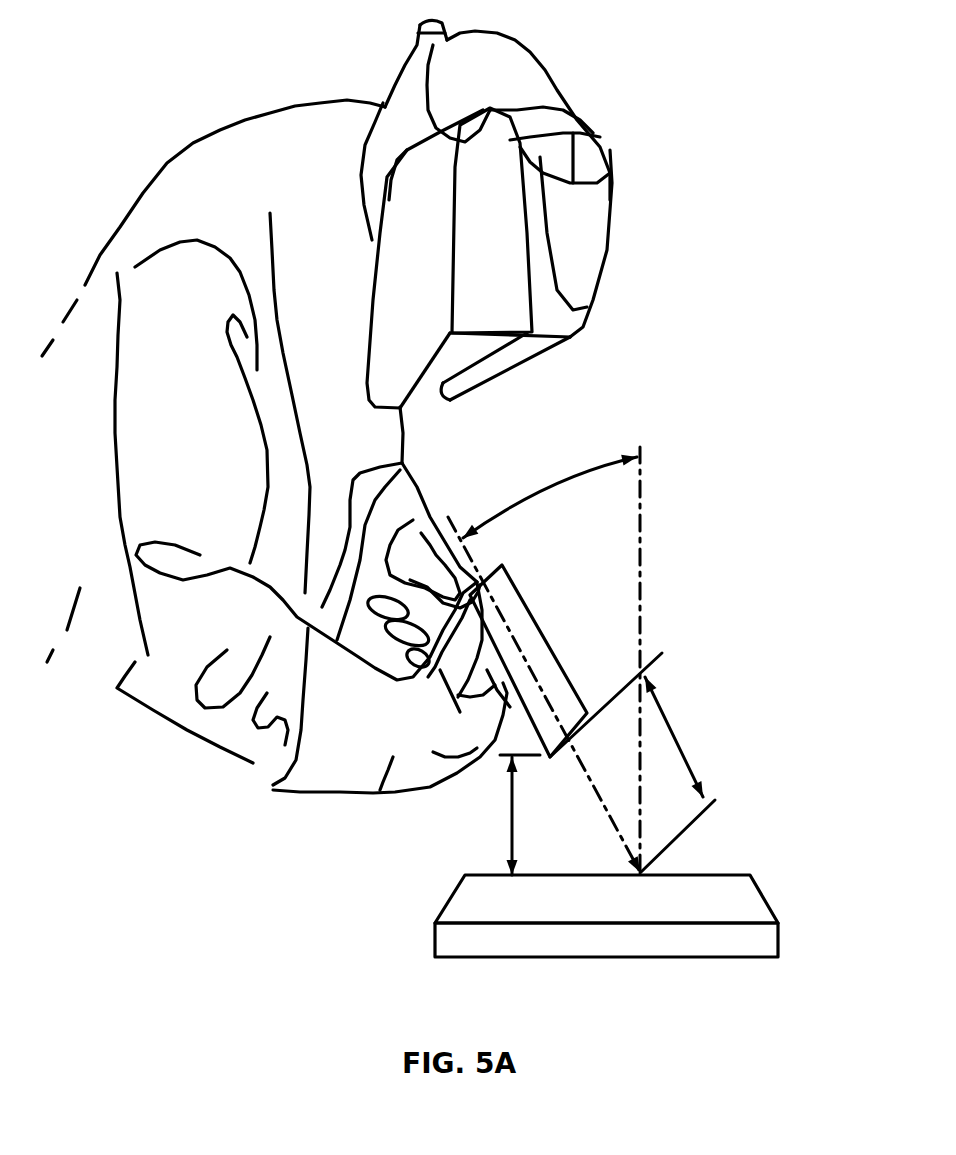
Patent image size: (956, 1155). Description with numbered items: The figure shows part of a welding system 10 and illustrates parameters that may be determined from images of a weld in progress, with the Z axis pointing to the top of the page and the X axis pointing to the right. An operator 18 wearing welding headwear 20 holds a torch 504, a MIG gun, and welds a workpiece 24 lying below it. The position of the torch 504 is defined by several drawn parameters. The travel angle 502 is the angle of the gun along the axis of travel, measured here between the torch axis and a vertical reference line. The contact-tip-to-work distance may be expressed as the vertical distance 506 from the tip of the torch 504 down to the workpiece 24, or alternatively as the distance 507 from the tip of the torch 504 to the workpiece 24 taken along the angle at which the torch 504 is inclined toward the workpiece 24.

The welding system 10 is at (522, 401).
The operator 18 is at (276, 422).
The welding headwear 20 is at (597, 250).
The workpiece 24 is at (763, 897).
The travel angle 502 is at (549, 490).
The torch 504 is at (545, 641).
The vertical contact-tip-to-work distance 506 is at (515, 812).
The angled contact-tip-to-work distance 507 is at (670, 720).